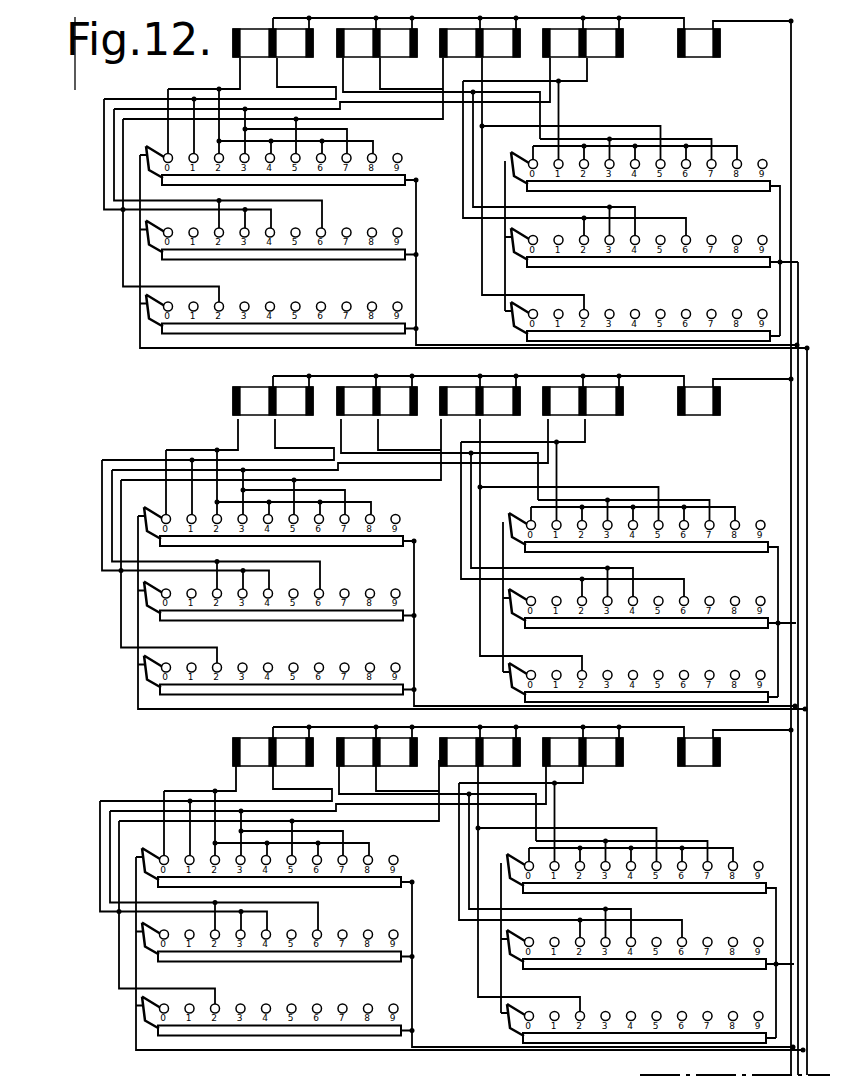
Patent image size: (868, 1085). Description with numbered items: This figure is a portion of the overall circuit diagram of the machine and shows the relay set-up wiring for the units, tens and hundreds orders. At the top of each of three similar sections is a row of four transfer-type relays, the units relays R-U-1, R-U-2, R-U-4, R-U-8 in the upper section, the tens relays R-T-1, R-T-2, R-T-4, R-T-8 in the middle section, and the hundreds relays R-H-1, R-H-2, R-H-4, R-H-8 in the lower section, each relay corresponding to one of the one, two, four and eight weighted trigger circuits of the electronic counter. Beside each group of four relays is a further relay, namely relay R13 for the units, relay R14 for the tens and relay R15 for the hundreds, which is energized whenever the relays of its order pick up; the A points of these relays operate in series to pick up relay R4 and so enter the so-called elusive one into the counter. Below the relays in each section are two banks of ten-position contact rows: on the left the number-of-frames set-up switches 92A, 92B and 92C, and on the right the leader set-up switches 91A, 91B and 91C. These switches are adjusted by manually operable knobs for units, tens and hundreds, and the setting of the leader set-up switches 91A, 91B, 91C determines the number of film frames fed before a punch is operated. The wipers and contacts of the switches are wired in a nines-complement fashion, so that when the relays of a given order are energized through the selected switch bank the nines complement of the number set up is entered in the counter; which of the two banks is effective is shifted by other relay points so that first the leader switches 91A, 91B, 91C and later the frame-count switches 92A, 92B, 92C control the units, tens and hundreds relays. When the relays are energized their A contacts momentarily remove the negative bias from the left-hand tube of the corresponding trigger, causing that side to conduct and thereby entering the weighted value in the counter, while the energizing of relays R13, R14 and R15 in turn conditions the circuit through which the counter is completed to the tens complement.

The units relay of weight one R-U-1 is at (263, 56).
The units relay of weight two R-U-2 is at (367, 56).
The units relay of weight four R-U-4 is at (471, 56).
The units relay of weight eight R-U-8 is at (576, 56).
The relay R13 is at (714, 58).
The units number-of-frames set-up switch 92A is at (140, 258).
The units leader set-up switch 91A is at (505, 265).
The tens relay of weight one R-T-1 is at (258, 392).
The tens relay of weight two R-T-2 is at (382, 362).
The tens relay of weight four R-T-4 is at (491, 363).
The tens relay of weight eight R-T-8 is at (598, 363).
The relay R14 is at (712, 417).
The tens number-of-frames set-up switch 92B is at (138, 621).
The tens leader set-up switch 91B is at (503, 630).
The hundreds relay of weight one R-H-1 is at (258, 748).
The hundreds relay of weight two R-H-2 is at (380, 760).
The hundreds relay of weight four R-H-4 is at (462, 748).
The hundreds relay of weight eight R-H-8 is at (598, 748).
The relay R15 is at (712, 767).
The hundreds number-of-frames set-up switch 92C is at (136, 962).
The hundreds leader set-up switch 91C is at (501, 972).